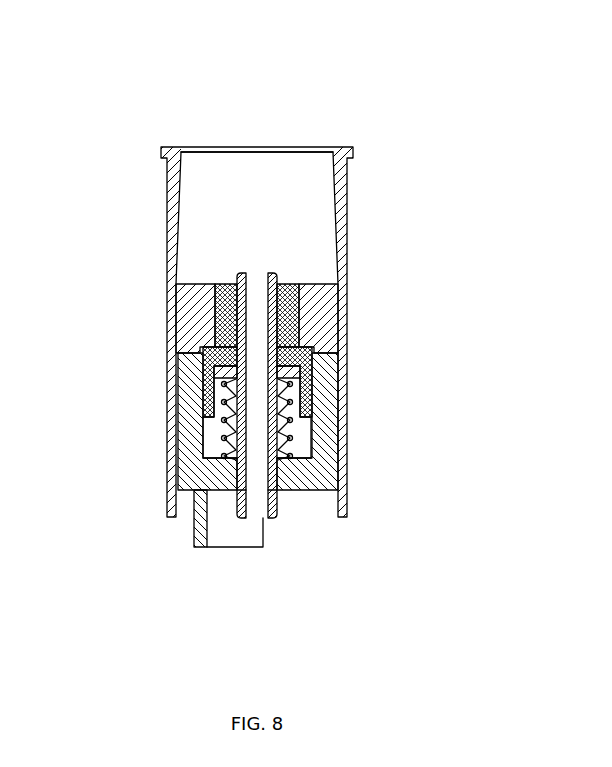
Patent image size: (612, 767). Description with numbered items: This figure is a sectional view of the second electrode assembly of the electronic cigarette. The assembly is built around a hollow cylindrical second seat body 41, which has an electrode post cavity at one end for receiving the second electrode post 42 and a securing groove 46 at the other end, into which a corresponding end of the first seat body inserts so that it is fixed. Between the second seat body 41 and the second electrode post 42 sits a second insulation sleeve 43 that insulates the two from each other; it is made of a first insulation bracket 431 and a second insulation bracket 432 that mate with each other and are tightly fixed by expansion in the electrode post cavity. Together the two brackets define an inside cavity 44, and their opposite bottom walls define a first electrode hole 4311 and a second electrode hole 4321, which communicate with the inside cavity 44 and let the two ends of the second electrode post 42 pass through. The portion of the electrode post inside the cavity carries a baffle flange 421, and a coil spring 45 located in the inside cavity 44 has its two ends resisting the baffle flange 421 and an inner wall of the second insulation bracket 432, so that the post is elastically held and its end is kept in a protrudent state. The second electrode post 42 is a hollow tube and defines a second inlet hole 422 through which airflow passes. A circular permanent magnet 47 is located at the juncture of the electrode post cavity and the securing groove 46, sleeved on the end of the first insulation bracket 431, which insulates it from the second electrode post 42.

The second seat body 41 is at (340, 187).
The second electrode post 42 is at (350, 428).
The baffle flange 421 is at (213, 373).
The second inlet hole 422 is at (258, 508).
The second insulation sleeve 43 is at (285, 406).
The first insulation bracket 431 is at (256, 296).
The first electrode hole 4311 is at (230, 282).
The second insulation bracket 432 is at (281, 495).
The second electrode hole 4321 is at (235, 490).
The inside cavity 44 is at (302, 442).
The coil spring 45 is at (283, 430).
The securing groove 46 is at (265, 197).
The permanent magnet 47 is at (203, 308).